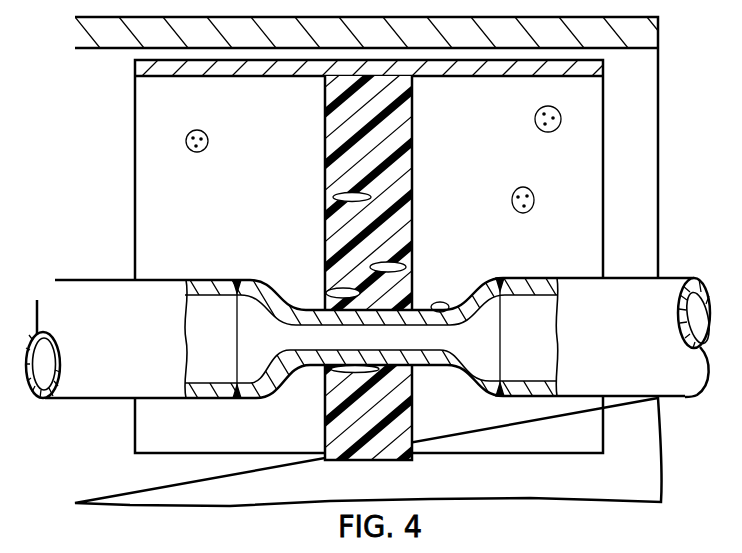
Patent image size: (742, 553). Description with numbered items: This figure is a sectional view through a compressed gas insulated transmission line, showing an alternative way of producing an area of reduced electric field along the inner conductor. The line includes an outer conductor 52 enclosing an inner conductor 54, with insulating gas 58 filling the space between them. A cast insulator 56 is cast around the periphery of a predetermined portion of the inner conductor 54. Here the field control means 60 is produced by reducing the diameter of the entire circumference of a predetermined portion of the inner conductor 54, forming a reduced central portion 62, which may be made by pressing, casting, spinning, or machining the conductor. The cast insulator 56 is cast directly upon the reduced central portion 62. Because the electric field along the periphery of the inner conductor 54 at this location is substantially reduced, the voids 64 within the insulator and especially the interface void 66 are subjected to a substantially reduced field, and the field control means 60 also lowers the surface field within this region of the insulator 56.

The outer conductor 52 is at (650, 33).
The inner conductor 54 is at (369, 328).
The cast insulator 56 is at (411, 207).
The insulating gas 58 is at (208, 140).
The field control means 60 is at (447, 284).
The reduced central portion 62 is at (455, 318).
The voids 64 is at (335, 290).
The interface void 66 is at (328, 369).